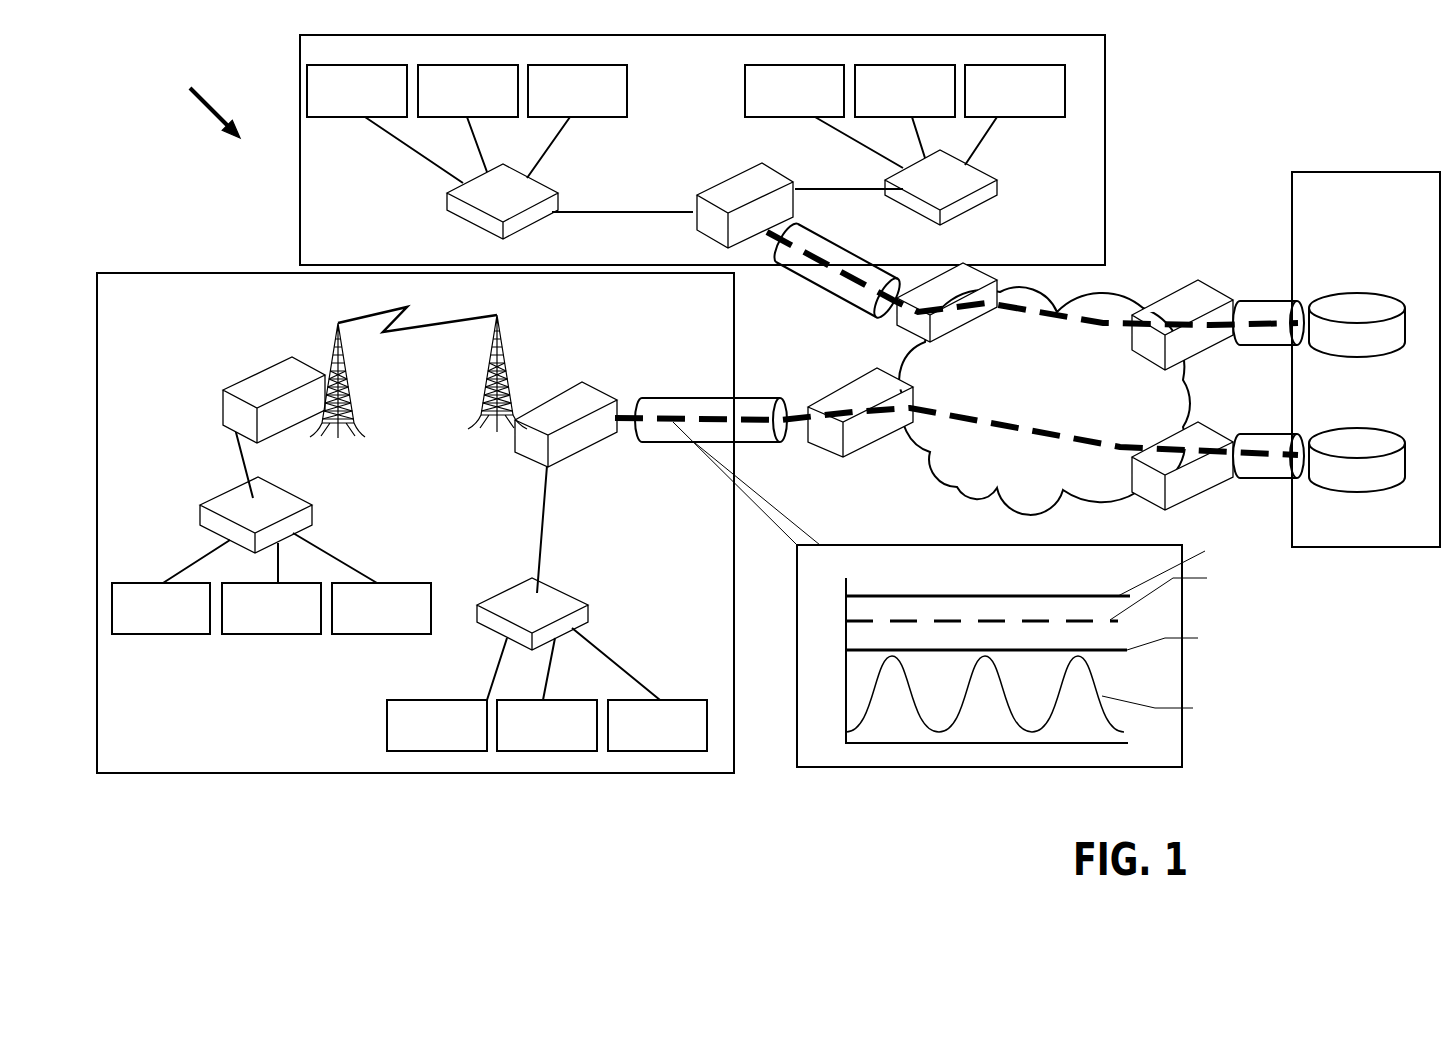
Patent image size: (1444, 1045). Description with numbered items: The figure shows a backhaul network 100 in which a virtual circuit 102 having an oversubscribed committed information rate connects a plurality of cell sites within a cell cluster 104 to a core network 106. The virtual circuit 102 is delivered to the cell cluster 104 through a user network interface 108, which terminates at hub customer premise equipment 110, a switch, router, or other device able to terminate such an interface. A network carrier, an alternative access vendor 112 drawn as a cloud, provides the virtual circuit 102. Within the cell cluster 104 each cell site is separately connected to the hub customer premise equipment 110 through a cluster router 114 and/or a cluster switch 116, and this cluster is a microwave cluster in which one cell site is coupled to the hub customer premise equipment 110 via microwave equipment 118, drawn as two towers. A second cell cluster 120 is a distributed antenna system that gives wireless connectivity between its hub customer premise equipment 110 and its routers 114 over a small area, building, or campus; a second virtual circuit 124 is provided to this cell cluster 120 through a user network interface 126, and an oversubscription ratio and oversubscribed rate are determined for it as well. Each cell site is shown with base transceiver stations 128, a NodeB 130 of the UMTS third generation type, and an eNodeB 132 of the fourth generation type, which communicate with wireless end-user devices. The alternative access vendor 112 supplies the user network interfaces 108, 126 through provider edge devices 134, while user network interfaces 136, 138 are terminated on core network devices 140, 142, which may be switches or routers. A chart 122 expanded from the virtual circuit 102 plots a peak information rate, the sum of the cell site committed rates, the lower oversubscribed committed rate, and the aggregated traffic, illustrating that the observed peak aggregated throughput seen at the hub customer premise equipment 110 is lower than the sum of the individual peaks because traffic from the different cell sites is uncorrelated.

The backhaul network 100 is at (194, 103).
The virtual circuit 102 is at (707, 412).
The cell cluster 104 is at (415, 523).
The core network 106 is at (1366, 359).
The user network interface 108 is at (765, 397).
The hub customer premise equipment 110 is at (743, 188).
The alternative access vendor 112 is at (1044, 401).
The cluster router 114 is at (447, 198).
The cluster switch 116 is at (283, 382).
The microwave equipment 118 is at (350, 403).
The cell cluster 120 is at (702, 150).
The chart 122 is at (1173, 740).
The virtual circuit 124 is at (818, 268).
The user network interface 126 is at (847, 300).
The base transceiver station 128 is at (340, 65).
The NodeB 130 is at (442, 65).
The eNodeB 132 is at (558, 65).
The provider edge device 134 is at (873, 332).
The user network interface 136 is at (1253, 303).
The user network interface 138 is at (1255, 437).
The core network device 140 is at (1350, 340).
The core network device 142 is at (1360, 473).